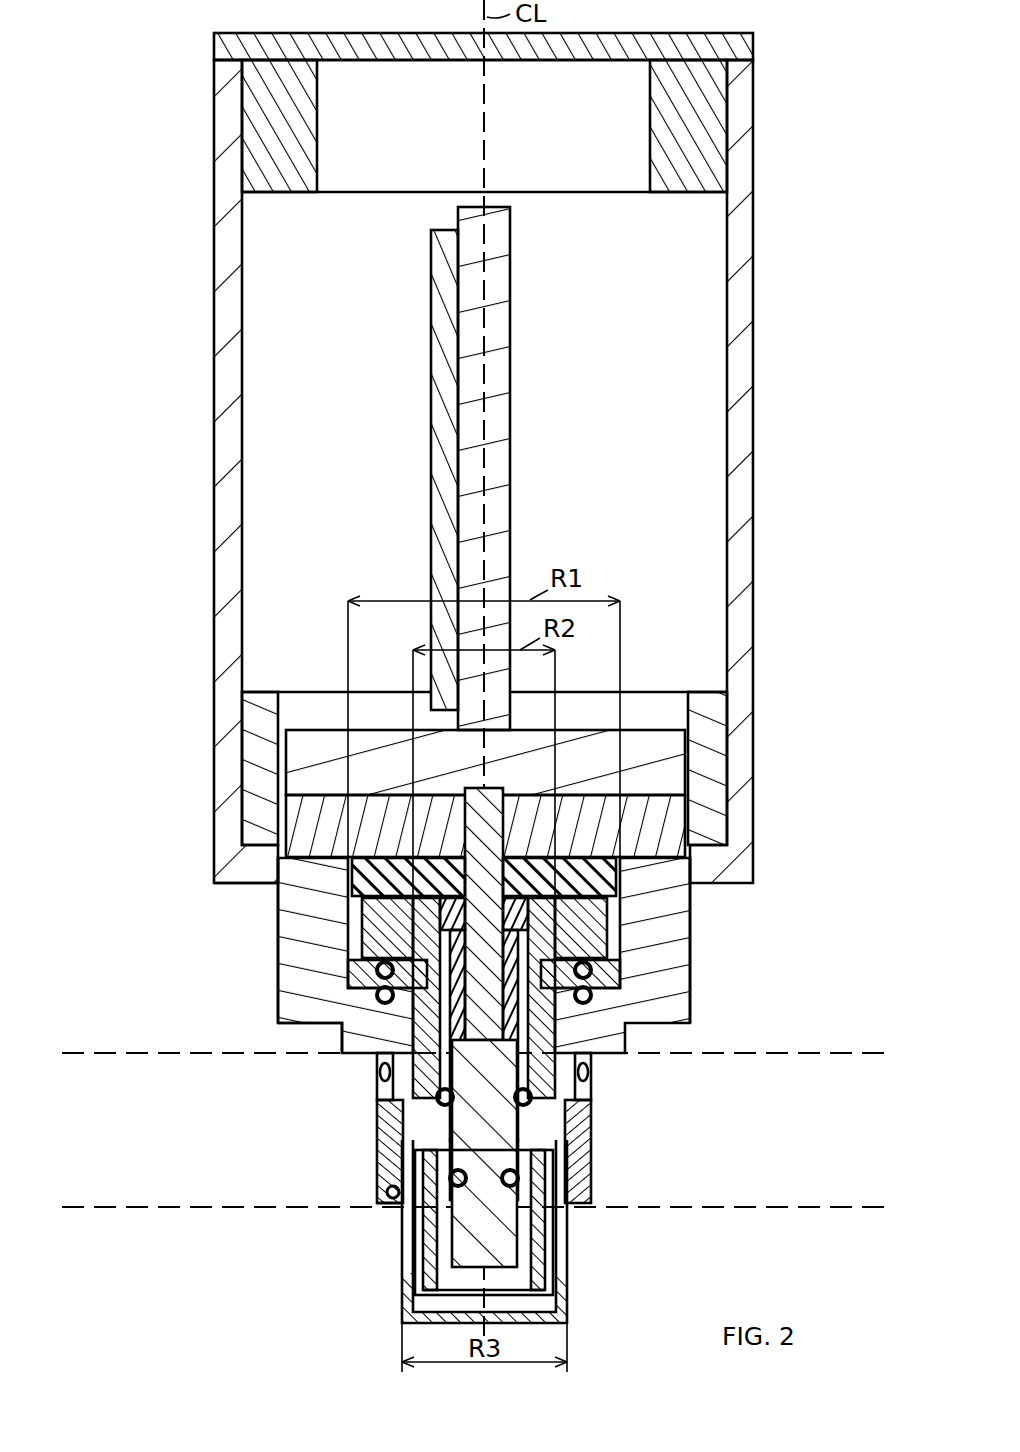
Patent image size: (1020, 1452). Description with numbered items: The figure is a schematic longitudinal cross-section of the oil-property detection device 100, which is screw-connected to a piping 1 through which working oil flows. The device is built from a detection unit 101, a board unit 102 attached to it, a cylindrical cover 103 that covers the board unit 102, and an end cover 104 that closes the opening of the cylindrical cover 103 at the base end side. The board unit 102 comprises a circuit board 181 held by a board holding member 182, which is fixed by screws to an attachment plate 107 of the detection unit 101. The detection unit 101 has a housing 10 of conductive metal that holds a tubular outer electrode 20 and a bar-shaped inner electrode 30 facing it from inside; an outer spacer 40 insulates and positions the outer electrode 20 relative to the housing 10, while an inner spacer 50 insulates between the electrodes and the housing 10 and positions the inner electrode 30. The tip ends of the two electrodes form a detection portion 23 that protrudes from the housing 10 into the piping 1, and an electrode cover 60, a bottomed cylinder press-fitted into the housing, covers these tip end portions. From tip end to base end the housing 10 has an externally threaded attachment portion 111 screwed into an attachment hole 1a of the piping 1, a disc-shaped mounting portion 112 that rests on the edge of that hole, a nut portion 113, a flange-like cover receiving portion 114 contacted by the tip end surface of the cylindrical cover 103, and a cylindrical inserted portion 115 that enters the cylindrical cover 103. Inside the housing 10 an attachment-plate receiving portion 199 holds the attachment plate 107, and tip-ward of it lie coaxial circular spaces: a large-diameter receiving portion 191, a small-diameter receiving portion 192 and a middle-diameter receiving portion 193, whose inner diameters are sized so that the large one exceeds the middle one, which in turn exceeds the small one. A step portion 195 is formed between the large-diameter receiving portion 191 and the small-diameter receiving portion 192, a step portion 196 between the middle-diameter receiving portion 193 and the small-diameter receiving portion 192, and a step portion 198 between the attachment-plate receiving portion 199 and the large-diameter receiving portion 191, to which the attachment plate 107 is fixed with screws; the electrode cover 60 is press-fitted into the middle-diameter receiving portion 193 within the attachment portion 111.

The piping 1 is at (150, 1052).
The attachment hole 1a is at (390, 1204).
The housing 10 is at (690, 975).
The outer electrode 20 is at (545, 1292).
The detection portion 23 is at (545, 1226).
The inner electrode 30 is at (517, 1250).
The outer spacer 40 is at (592, 1072).
The inner spacer 50 is at (595, 1192).
The electrode cover 60 is at (568, 1315).
The oil-property detection device 100 is at (415, 447).
The detection unit 101 is at (262, 962).
The board unit 102 is at (469, 468).
The cylindrical cover 103 is at (214, 453).
The end cover 104 is at (285, 193).
The attachment plate 107 is at (648, 790).
The attachment portion 111 is at (377, 1168).
The mounting portion 112 is at (340, 1040).
The nut portion 113 is at (278, 985).
The cover receiving portion 114 is at (242, 852).
The inserted portion 115 is at (242, 691).
The circuit board 181 is at (432, 433).
The board holding member 182 is at (512, 437).
The large-diameter receiving portion 191 is at (607, 912).
The small-diameter receiving portion 192 is at (557, 1030).
The middle-diameter receiving portion 193 is at (560, 1140).
The step portion 195 is at (616, 972).
The step portion 196 is at (377, 1153).
The step portion 198 is at (650, 840).
The attachment-plate receiving portion 199 is at (688, 695).